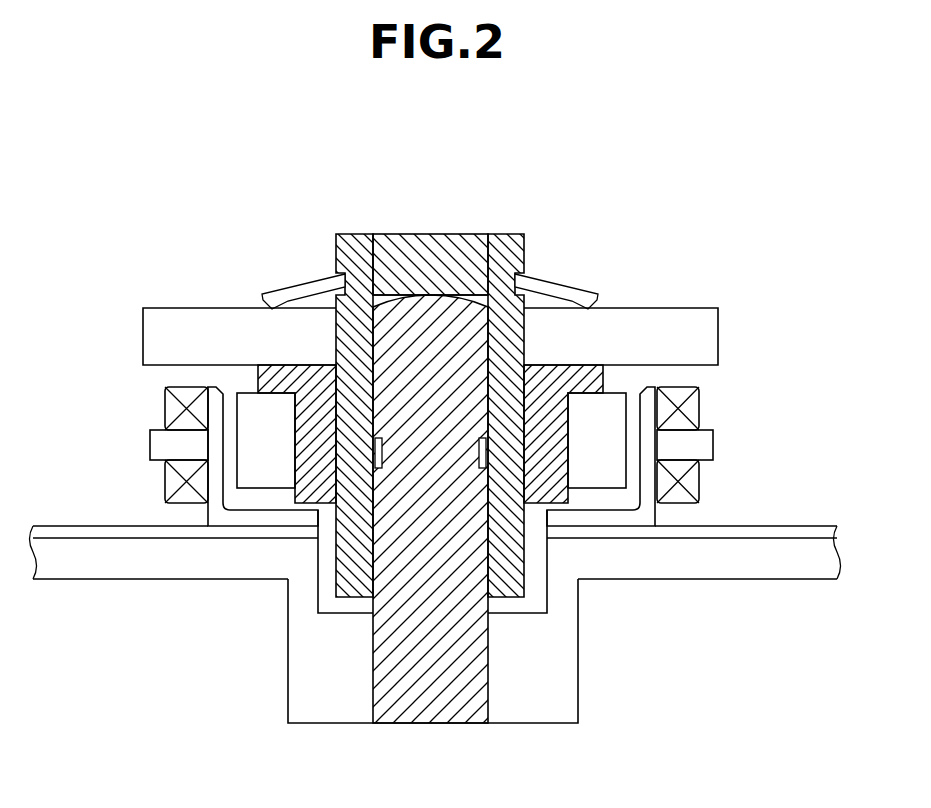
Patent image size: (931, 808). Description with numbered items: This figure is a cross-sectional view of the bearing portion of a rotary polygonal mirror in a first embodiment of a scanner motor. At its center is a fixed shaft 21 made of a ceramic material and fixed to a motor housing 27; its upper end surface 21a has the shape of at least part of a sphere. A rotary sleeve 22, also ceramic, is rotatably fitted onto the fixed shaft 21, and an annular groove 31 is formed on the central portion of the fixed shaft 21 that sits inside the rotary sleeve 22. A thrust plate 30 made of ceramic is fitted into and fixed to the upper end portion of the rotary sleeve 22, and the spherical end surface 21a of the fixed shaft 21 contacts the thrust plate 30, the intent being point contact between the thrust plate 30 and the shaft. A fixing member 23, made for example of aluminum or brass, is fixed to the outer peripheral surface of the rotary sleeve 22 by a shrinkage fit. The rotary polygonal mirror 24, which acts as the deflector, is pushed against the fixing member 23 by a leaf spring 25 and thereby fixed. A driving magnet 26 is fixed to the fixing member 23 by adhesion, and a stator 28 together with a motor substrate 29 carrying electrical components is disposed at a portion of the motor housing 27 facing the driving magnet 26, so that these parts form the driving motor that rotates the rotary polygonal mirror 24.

The fixed shaft 21 is at (452, 695).
The upper end surface 21a is at (481, 290).
The rotary sleeve 22 is at (512, 261).
The fixing member 23 is at (603, 380).
The rotary polygonal mirror 24 is at (690, 322).
The leaf spring 25 is at (577, 297).
The driving magnet 26 is at (607, 475).
The motor housing 27 is at (553, 655).
The stator 28 is at (692, 412).
The motor substrate 29 is at (708, 535).
The thrust plate 30 is at (417, 247).
The annular groove 31 is at (377, 440).